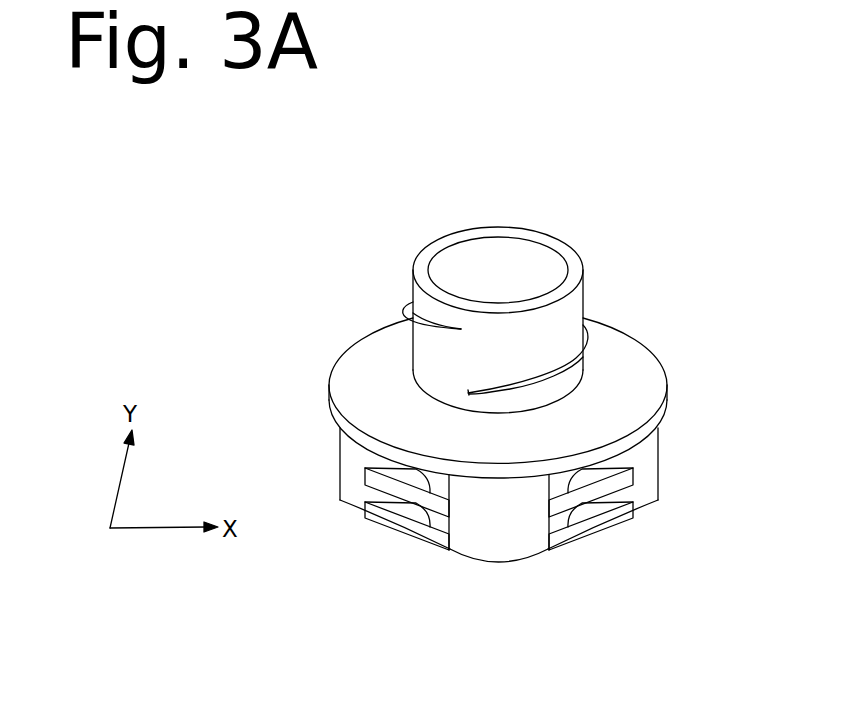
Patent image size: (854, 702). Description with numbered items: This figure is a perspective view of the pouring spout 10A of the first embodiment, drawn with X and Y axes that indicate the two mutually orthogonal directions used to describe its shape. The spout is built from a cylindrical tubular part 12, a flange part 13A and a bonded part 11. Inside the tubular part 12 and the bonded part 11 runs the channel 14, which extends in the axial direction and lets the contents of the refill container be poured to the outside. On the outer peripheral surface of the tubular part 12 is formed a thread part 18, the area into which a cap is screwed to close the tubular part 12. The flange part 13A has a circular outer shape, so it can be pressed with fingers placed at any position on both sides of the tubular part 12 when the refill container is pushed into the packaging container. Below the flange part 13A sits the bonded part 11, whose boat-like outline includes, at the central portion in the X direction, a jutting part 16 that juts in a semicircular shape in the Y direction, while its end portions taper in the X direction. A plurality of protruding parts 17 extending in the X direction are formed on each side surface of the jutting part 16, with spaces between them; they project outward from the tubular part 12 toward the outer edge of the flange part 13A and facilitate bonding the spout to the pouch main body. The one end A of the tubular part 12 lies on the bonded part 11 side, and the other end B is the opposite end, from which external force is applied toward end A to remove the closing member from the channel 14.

The clip (mounting member) 10A is at (365, 223).
The bonded part 11 is at (570, 545).
The tubular part 12 is at (573, 268).
The flange part 13A is at (652, 362).
The channel 14 is at (460, 272).
The jutting part 16 is at (502, 555).
The protruding part 17 is at (368, 503).
The thread part 18 is at (588, 333).
The one end A is at (427, 546).
The other end B is at (555, 245).